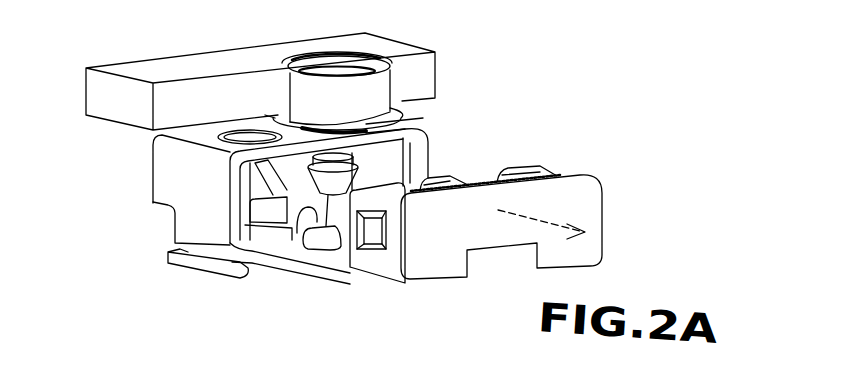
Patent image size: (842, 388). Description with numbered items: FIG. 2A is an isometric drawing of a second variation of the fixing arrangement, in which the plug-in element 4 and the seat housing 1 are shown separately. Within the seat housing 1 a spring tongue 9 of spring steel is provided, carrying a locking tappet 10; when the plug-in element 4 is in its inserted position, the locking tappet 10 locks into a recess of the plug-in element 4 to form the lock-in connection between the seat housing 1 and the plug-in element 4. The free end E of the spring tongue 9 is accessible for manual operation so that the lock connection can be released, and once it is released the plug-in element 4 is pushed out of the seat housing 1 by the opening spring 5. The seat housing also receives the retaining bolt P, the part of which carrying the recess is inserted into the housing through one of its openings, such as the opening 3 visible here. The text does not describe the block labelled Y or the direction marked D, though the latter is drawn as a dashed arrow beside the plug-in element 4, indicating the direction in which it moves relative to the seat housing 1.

The block / terminal support Y is at (98, 92).
The opening 3 is at (249, 131).
The retaining bolt P is at (338, 182).
The seat housing 1 is at (165, 185).
The opening spring 5 is at (268, 167).
The spring tongue 9 is at (287, 223).
The locking tappet 10 is at (303, 224).
The free end E is at (333, 228).
The plug-in element 4 is at (590, 205).
The insertion direction D is at (637, 234).